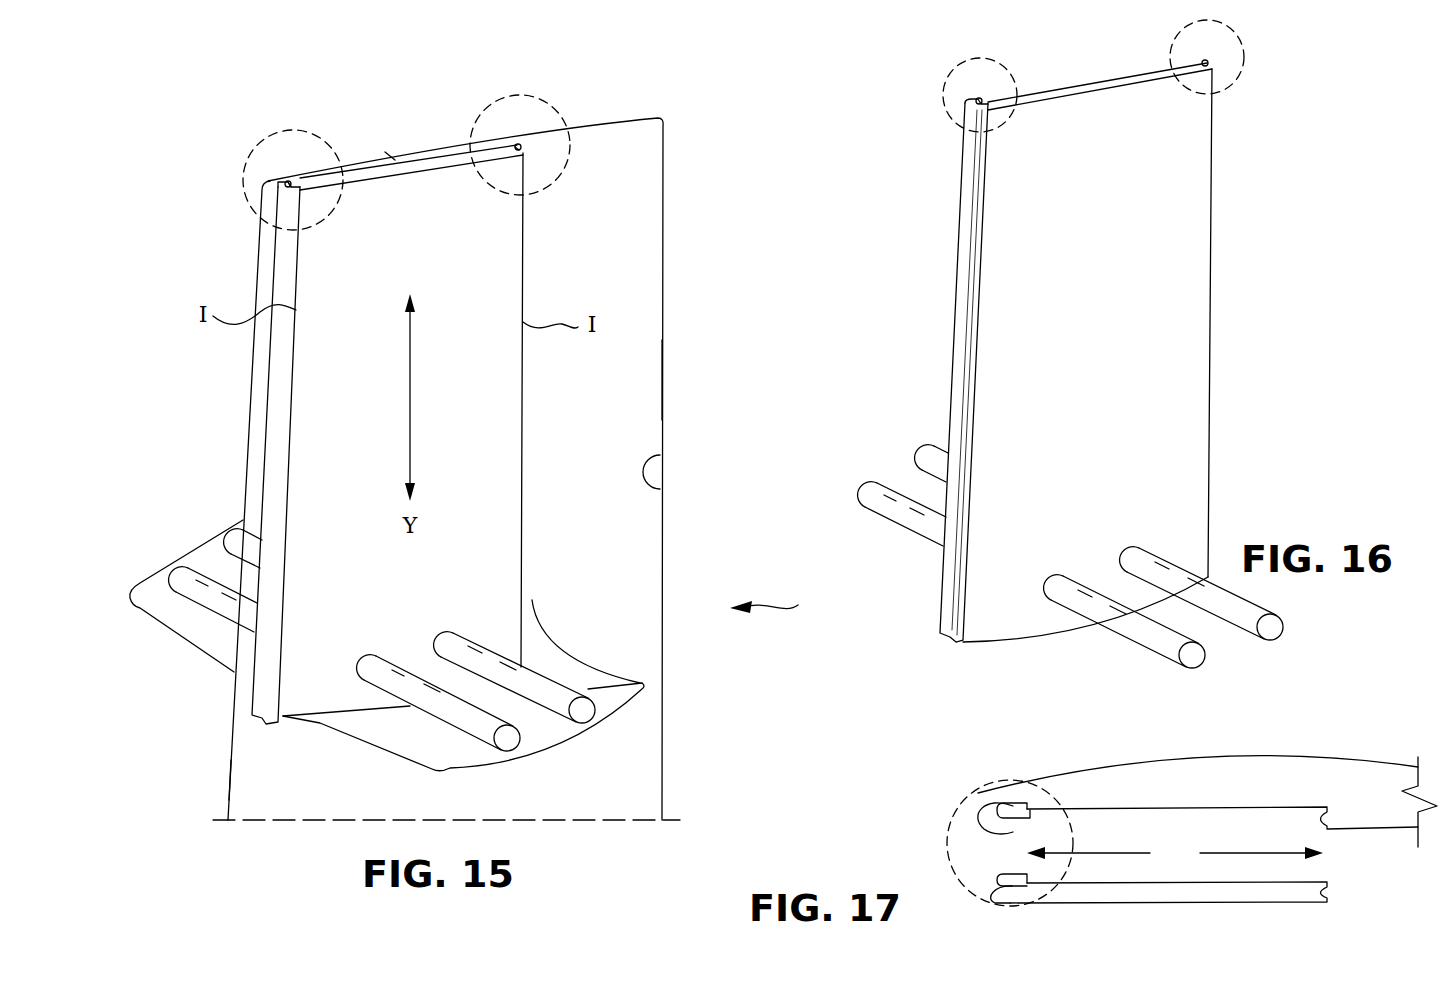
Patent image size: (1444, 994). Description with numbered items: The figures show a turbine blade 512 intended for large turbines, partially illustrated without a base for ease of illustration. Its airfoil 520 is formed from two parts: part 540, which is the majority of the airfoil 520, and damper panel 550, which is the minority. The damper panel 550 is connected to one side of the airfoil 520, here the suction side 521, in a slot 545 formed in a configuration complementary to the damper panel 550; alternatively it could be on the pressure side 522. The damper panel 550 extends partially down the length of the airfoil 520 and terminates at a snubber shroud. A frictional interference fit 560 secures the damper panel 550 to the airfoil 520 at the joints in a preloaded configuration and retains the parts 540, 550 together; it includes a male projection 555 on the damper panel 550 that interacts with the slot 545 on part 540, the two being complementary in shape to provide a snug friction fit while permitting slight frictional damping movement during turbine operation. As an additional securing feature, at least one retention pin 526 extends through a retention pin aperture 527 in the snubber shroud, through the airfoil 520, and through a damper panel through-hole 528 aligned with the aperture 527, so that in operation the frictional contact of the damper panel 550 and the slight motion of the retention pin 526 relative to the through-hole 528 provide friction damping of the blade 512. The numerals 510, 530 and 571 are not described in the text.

In FIG. 15, the rail post 510 is at (258, 237).
In FIG. 15, the blade 512 is at (779, 595).
In FIG. 15, the airfoil 520 is at (663, 234).
In FIG. 15, the suction side 521 is at (610, 574).
In FIG. 15, the pressure side 522 is at (386, 152).
In FIG. 15, the retention pin 526 is at (172, 552).
In FIG. 16, the retention pin 526 is at (1200, 655).
In FIG. 15, the retention pin aperture 527 is at (323, 718).
In FIG. 15, the damper panel through-hole 528 is at (614, 124).
In FIG. 17, the damper panel through-hole 528 is at (1290, 773).
In FIG. 17, the lower flange 530 is at (1097, 895).
In FIG. 15, the part 540 is at (664, 490).
In FIG. 17, the part 540 is at (1110, 762).
In FIG. 15, the slot 545 is at (290, 180).
In FIG. 17, the slot 545 is at (1012, 792).
In FIG. 15, the damper panel 550 is at (432, 197).
In FIG. 15, the male projection 555 is at (286, 185).
In FIG. 16, the male projection 555 is at (970, 100).
In FIG. 17, the male projection 555 is at (1008, 885).
In FIG. 15, the frictional interference fit 560 is at (283, 133).
In FIG. 16, the frictional interference fit 560 is at (1010, 63).
In FIG. 17, the frictional interference fit 560 is at (948, 854).
In FIG. 15, the side edge 571 is at (664, 377).